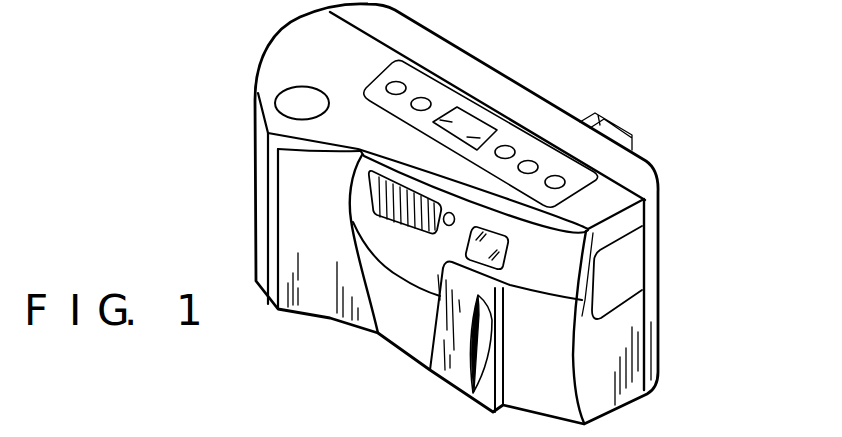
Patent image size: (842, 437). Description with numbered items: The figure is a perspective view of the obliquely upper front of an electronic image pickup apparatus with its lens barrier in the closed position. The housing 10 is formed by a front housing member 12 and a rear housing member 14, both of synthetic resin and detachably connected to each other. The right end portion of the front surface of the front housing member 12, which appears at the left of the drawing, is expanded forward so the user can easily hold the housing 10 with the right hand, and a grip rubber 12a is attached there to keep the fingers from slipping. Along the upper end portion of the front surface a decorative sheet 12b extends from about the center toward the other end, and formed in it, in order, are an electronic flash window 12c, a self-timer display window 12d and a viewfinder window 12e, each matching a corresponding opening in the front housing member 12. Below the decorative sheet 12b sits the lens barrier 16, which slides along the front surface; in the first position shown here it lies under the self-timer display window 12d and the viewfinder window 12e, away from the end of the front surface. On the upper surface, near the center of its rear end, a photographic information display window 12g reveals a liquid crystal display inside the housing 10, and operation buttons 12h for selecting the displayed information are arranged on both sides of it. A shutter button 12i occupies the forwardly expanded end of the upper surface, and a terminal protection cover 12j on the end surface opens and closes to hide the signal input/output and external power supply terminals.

The housing 10 is at (292, 58).
The front housing member 12 is at (263, 78).
The grip rubber 12a is at (318, 304).
The decorative sheet 12b is at (410, 269).
The electronic flash window 12c is at (370, 199).
The self-timer display window 12d is at (447, 212).
The viewfinder window 12e is at (501, 248).
The photographic information display window 12g is at (489, 124).
The operation buttons 12h is at (406, 85).
The shutter button 12i is at (313, 97).
The terminal protection cover 12j is at (627, 271).
The rear housing member 14 is at (643, 174).
The lens barrier 16 is at (483, 296).